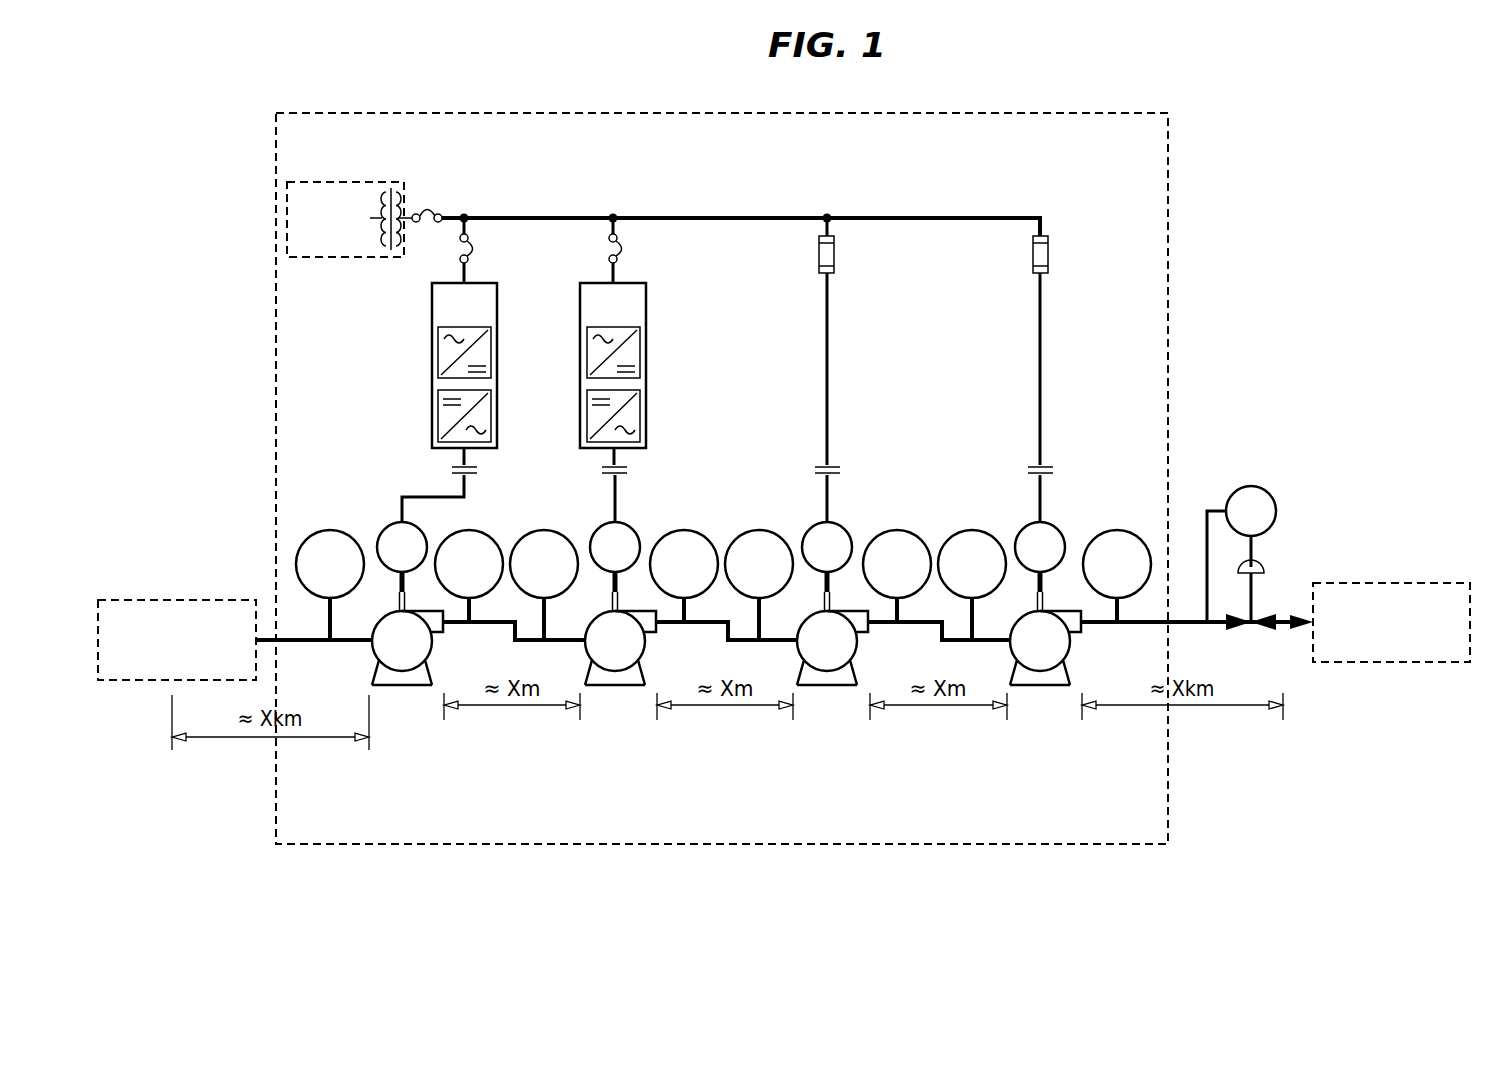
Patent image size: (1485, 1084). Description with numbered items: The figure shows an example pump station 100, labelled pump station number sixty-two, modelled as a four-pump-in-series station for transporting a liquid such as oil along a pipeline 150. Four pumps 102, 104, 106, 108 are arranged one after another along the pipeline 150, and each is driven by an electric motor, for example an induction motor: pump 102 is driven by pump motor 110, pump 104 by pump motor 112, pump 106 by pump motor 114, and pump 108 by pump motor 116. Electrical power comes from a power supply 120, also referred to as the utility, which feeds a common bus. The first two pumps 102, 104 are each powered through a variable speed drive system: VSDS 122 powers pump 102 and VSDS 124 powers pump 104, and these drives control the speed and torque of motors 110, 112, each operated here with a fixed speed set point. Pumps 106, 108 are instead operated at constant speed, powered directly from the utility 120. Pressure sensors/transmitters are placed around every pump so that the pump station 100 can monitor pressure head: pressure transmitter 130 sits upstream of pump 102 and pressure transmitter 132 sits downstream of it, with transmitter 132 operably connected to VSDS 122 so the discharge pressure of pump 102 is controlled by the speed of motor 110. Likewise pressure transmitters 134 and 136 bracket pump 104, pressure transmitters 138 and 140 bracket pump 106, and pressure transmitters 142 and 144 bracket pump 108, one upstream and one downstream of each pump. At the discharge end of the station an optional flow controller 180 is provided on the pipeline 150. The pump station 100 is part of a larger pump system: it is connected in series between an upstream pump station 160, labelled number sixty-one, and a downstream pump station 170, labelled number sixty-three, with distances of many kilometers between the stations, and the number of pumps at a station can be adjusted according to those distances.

The pump station 100 is at (1197, 205).
The pump 102 is at (399, 671).
The pump 104 is at (612, 671).
The pump 106 is at (824, 671).
The pump 108 is at (1037, 671).
The pump motor 110 is at (390, 525).
The pump motor 112 is at (627, 525).
The pump motor 114 is at (839, 525).
The pump motor 116 is at (1053, 525).
The power supply 120 is at (348, 258).
The variable speed drive system 122 is at (432, 370).
The variable speed drive system 124 is at (646, 370).
The pressure transmitter 130 is at (330, 529).
The pressure transmitter 132 is at (475, 531).
The pressure transmitter 134 is at (549, 530).
The pressure transmitter 136 is at (684, 530).
The pressure transmitter 138 is at (759, 530).
The pressure transmitter 140 is at (898, 530).
The pressure transmitter 142 is at (972, 530).
The pressure transmitter 144 is at (1117, 530).
The pipeline 150 is at (292, 641).
The pump station 160 is at (184, 600).
The pump station 170 is at (1400, 583).
The flow controller 180 is at (1247, 486).